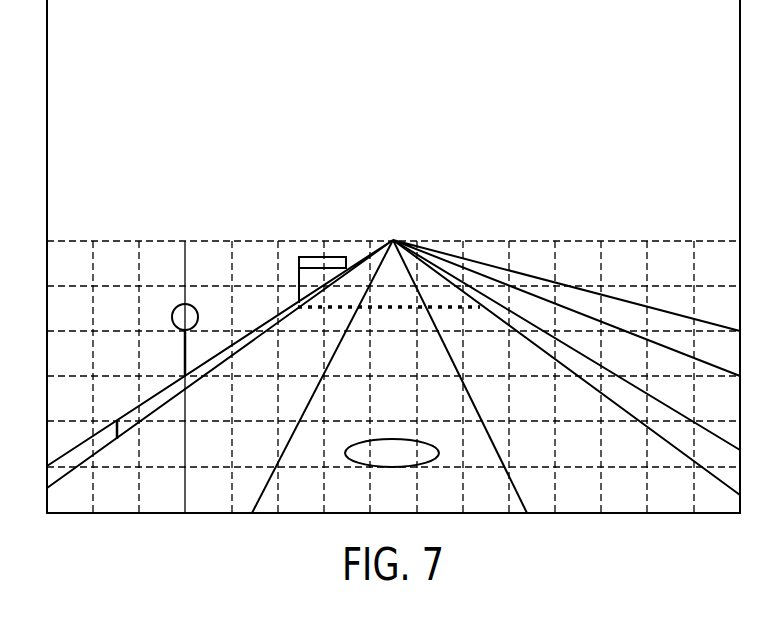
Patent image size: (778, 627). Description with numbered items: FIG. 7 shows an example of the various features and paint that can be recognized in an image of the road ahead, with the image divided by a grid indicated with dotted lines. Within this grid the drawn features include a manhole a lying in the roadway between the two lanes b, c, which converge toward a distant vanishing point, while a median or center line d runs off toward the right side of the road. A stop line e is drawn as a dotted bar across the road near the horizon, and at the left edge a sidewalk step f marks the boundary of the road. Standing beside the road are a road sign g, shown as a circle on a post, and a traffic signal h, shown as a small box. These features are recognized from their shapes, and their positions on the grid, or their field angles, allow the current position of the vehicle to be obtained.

The manhole a is at (348, 460).
The lane b is at (258, 489).
The lane c is at (518, 490).
The median or center line d is at (717, 437).
The stop line e is at (398, 307).
The sidewalk step f is at (117, 421).
The road sign g is at (178, 305).
The traffic signal h is at (313, 257).